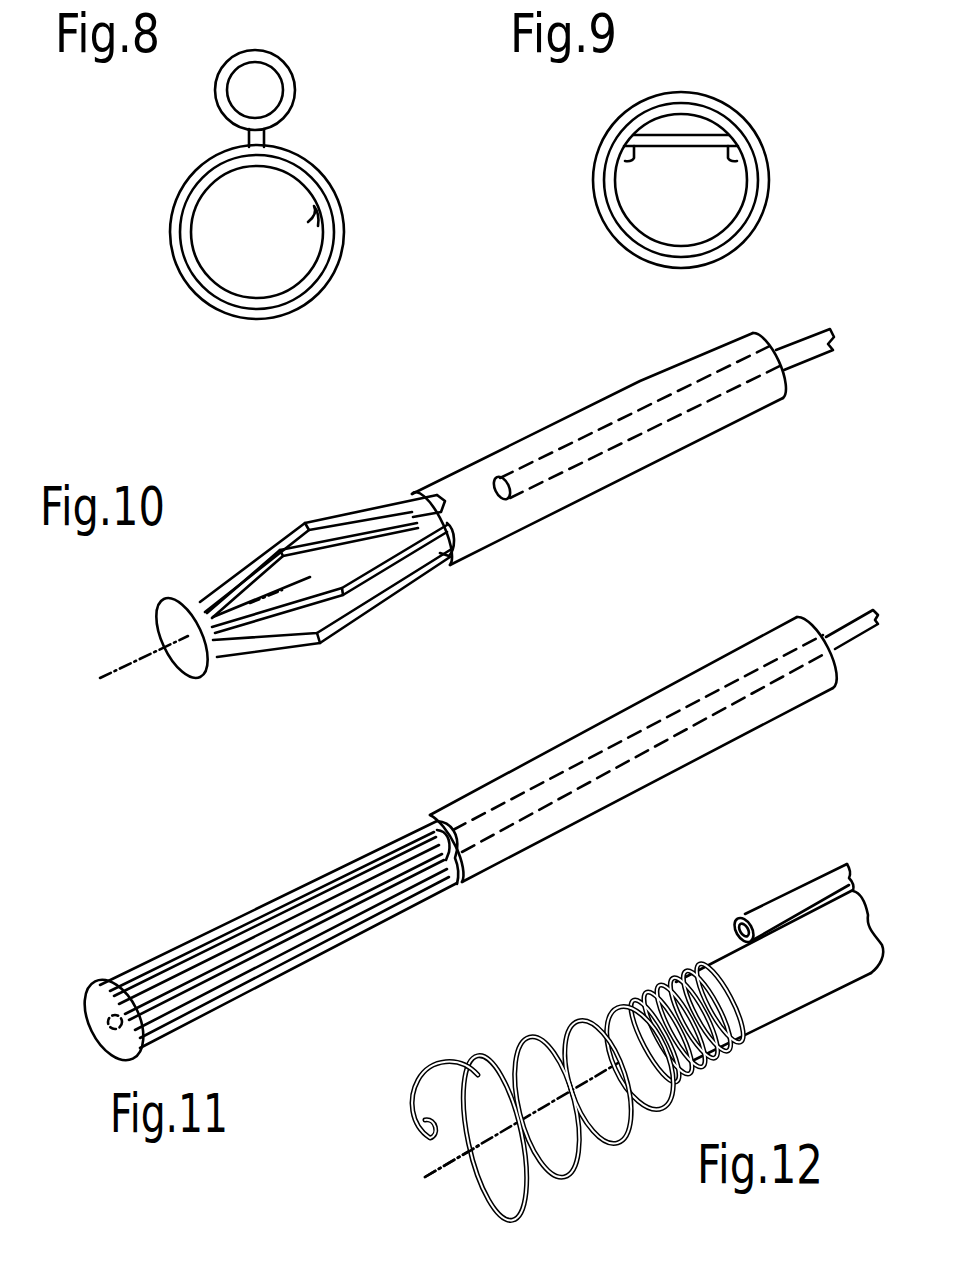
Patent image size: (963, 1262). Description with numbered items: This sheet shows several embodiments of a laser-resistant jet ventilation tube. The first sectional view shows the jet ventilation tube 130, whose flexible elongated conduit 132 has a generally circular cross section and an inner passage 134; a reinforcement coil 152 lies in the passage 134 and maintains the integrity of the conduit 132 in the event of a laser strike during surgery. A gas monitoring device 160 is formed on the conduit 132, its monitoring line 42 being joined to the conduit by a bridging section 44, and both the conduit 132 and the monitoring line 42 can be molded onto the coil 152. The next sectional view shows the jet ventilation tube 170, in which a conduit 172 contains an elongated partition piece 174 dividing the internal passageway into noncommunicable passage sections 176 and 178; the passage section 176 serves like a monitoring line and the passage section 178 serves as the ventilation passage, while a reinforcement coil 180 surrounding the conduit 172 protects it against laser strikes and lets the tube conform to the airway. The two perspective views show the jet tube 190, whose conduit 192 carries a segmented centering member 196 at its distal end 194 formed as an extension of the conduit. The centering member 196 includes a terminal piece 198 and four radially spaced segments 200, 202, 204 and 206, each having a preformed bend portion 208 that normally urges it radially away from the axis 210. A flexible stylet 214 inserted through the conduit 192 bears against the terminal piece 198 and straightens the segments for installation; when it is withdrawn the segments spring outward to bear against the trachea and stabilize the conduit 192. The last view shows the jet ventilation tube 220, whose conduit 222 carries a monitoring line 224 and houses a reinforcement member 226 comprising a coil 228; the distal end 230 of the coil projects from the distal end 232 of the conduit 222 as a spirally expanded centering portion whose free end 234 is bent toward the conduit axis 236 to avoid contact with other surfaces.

In FIG. 8, the monitoring line 42 is at (258, 58).
In FIG. 8, the bridging section 44 is at (247, 140).
In FIG. 8, the jet ventilation tube 130 is at (300, 105).
In FIG. 8, the conduit 132 is at (343, 200).
In FIG. 8, the inner passage 134 is at (288, 278).
In FIG. 8, the reinforcement coil 152 is at (310, 226).
In FIG. 8, the gas monitoring device 160 is at (294, 60).
In FIG. 9, the jet ventilation tube 170 is at (752, 108).
In FIG. 9, the conduit 172 is at (737, 171).
In FIG. 9, the partition piece 174 is at (633, 163).
In FIG. 9, the passage section 176 is at (678, 120).
In FIG. 9, the passage section 178 is at (648, 230).
In FIG. 9, the reinforcement coil 180 is at (757, 133).
In FIG. 10, the jet tube 190 is at (512, 430).
In FIG. 11, the jet tube 190 is at (615, 706).
In FIG. 10, the conduit 192 is at (646, 382).
In FIG. 11, the conduit 192 is at (673, 778).
In FIG. 10, the distal end 194 is at (465, 556).
In FIG. 11, the distal end 194 is at (480, 875).
In FIG. 10, the centering member 196 is at (378, 493).
In FIG. 11, the centering member 196 is at (341, 854).
In FIG. 10, the terminal piece 198 is at (173, 613).
In FIG. 11, the terminal piece 198 is at (100, 985).
In FIG. 10, the segment 200 is at (327, 520).
In FIG. 11, the segment 200 is at (280, 900).
In FIG. 10, the segment 202 is at (377, 570).
In FIG. 11, the segment 202 is at (335, 920).
In FIG. 10, the segment 204 is at (360, 613).
In FIG. 11, the segment 204 is at (390, 920).
In FIG. 10, the segment 206 is at (287, 553).
In FIG. 11, the segment 206 is at (222, 948).
In FIG. 10, the preformed bend portion 208 is at (307, 527).
In FIG. 10, the axis 210 is at (132, 658).
In FIG. 10, the flexible stylet 214 is at (803, 330).
In FIG. 11, the flexible stylet 214 is at (857, 610).
In FIG. 12, the jet ventilation tube 220 is at (694, 946).
In FIG. 12, the conduit 222 is at (845, 988).
In FIG. 12, the monitoring line 224 is at (793, 900).
In FIG. 12, the reinforcement member 226 is at (633, 1000).
In FIG. 12, the coil 228 is at (685, 1065).
In FIG. 12, the distal end 230 is at (490, 1050).
In FIG. 12, the distal end 232 is at (770, 1030).
In FIG. 12, the free end 234 is at (425, 1137).
In FIG. 12, the conduit axis 236 is at (430, 1172).